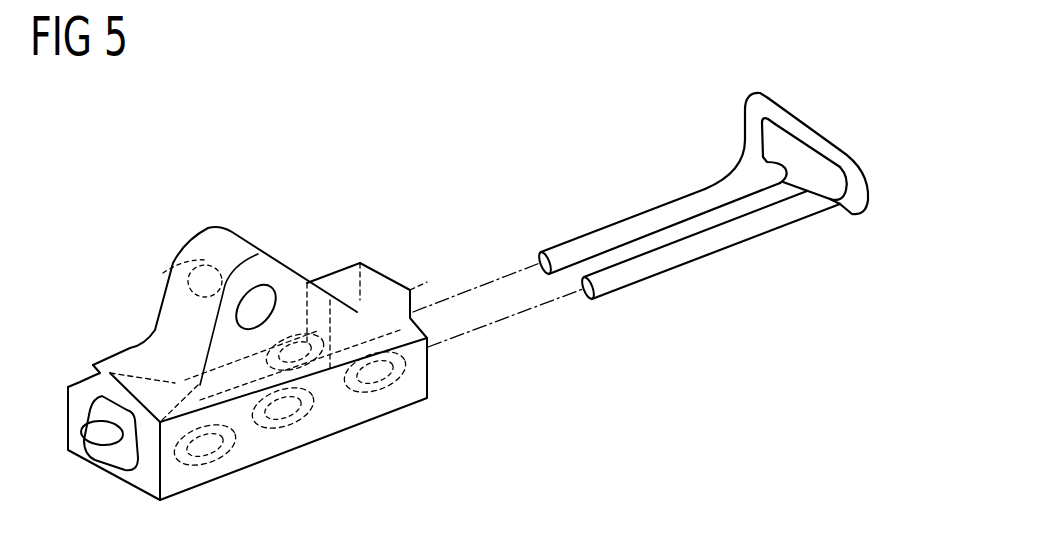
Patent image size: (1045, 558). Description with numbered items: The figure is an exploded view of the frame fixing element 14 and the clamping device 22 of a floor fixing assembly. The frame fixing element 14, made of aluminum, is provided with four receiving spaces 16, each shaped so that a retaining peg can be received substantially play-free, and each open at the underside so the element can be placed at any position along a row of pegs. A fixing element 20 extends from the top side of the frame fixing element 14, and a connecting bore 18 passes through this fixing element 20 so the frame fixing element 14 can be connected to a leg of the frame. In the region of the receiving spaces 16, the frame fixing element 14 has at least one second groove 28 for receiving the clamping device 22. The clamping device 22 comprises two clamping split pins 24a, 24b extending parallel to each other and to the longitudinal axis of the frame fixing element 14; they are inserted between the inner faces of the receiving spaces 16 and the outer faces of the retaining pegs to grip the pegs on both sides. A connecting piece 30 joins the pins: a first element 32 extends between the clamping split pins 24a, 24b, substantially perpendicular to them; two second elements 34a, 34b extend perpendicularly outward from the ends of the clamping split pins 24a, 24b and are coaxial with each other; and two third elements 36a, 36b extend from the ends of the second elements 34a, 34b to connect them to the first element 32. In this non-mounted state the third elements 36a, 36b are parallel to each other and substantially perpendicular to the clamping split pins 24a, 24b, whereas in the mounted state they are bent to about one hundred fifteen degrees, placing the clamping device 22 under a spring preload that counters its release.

The frame fixing element 14 is at (331, 264).
The receiving space 16 is at (120, 473).
The connecting bore 18 is at (161, 281).
The fixing element 20 is at (262, 255).
The clamping device 22 is at (667, 193).
The clamping split pin 24a is at (662, 265).
The clamping split pin 24b is at (595, 237).
The second groove 28 is at (82, 466).
The connecting piece 30 is at (817, 112).
The first element 32 is at (838, 136).
The second element 34a is at (827, 209).
The second element 34b is at (763, 162).
The third element 36a is at (872, 186).
The third element 36b is at (746, 128).